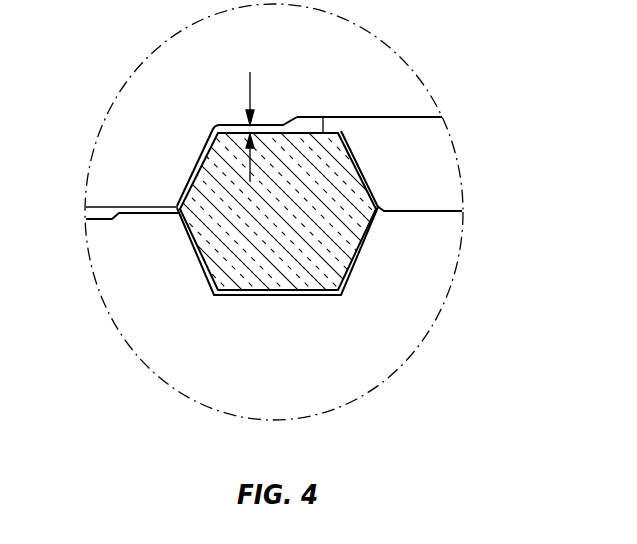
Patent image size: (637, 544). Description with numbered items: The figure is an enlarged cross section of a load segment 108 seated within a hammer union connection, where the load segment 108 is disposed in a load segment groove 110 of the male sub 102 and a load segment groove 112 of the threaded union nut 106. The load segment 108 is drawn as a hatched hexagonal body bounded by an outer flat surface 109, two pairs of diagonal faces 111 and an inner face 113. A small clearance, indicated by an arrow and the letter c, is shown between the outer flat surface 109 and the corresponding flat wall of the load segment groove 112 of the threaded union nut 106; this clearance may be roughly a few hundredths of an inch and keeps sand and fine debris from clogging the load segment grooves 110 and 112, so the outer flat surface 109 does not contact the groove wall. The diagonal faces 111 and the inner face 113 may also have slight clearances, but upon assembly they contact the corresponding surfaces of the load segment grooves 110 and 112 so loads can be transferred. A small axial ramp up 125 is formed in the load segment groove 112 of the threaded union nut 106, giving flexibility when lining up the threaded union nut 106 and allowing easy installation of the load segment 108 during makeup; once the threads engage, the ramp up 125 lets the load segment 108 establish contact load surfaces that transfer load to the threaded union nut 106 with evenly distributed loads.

The male sub 102 is at (160, 342).
The threaded union nut 106 is at (177, 52).
The load segment 108 is at (336, 166).
The outer flat surface 109 is at (324, 118).
The load segment groove 110 is at (305, 297).
The diagonal faces 111 is at (198, 166).
The load segment groove 112 is at (237, 124).
The inner face 113 is at (276, 297).
The axial ramp up 125 is at (287, 117).